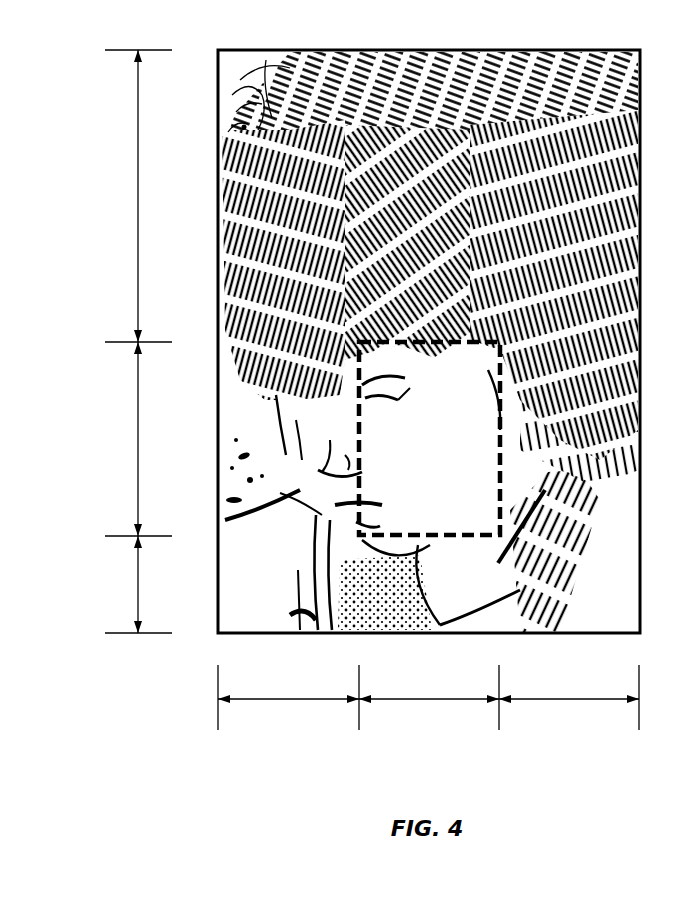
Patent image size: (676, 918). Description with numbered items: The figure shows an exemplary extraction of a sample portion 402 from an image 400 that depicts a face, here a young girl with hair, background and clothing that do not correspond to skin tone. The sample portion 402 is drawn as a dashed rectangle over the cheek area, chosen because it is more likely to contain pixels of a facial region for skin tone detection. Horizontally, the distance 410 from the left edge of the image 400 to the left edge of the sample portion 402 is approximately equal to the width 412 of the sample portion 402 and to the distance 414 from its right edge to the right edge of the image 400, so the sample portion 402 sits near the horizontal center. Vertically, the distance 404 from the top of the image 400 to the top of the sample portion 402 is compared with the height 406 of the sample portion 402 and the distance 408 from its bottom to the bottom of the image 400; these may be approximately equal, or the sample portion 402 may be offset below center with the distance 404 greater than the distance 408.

The image 400 is at (268, 50).
The sample portion 402 is at (512, 476).
The distance from top edge of image to top edge of sample portion 404 is at (72, 50).
The height of sample portion 406 is at (72, 342).
The distance from bottom edge of sample portion to bottom edge of image 408 is at (72, 536).
The distance from left edge of image to left edge of sample portion 410 is at (359, 747).
The width of sample portion 412 is at (499, 747).
The distance from right edge of sample portion to right edge of image 414 is at (639, 747).